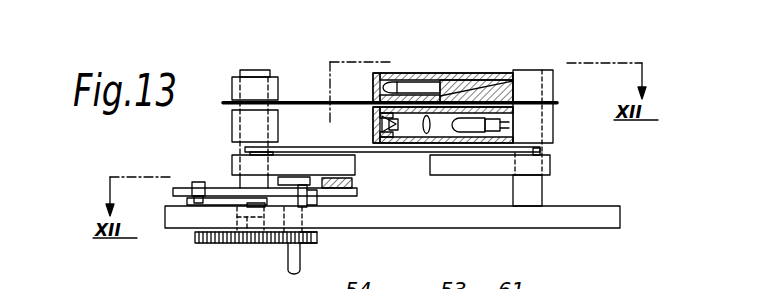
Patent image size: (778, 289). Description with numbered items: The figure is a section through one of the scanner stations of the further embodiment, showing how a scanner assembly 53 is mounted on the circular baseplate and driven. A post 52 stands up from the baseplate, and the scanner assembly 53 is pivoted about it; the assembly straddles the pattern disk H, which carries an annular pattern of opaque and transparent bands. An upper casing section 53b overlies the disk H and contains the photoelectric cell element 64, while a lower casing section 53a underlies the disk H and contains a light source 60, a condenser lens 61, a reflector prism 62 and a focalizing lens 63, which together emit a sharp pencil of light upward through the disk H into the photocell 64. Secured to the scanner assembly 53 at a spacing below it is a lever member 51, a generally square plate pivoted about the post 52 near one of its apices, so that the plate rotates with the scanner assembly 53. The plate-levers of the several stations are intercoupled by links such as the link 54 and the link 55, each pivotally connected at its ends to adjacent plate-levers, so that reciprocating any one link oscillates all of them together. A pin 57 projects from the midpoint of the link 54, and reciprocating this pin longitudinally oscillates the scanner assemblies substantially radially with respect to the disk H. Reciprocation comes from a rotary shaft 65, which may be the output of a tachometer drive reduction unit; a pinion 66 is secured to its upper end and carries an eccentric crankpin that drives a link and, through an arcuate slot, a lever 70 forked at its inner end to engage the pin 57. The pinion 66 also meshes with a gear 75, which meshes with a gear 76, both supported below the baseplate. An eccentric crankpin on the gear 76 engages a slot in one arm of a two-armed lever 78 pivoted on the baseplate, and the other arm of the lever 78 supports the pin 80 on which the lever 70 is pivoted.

The lever member 51 is at (537, 163).
The post 52 is at (531, 74).
The scanner assembly 53 is at (398, 124).
The lower casing section 53a is at (375, 129).
The upper casing section 53b is at (375, 81).
The link 54 is at (339, 178).
The link 55 is at (548, 151).
The pin 57 is at (337, 189).
The light source 60 is at (474, 133).
The condenser lens 61 is at (427, 137).
The reflector prism 62 is at (393, 137).
The focalizing lens 63 is at (378, 113).
The photoelectric cell element 64 is at (437, 83).
The rotary shaft 65 is at (291, 258).
The pinion 66 is at (317, 238).
The lever 70 is at (220, 187).
The gear 75 is at (245, 243).
The gear 76 is at (205, 246).
The two-armed lever 78 is at (212, 199).
The pivot 80 is at (198, 182).
The pattern disk H is at (313, 101).